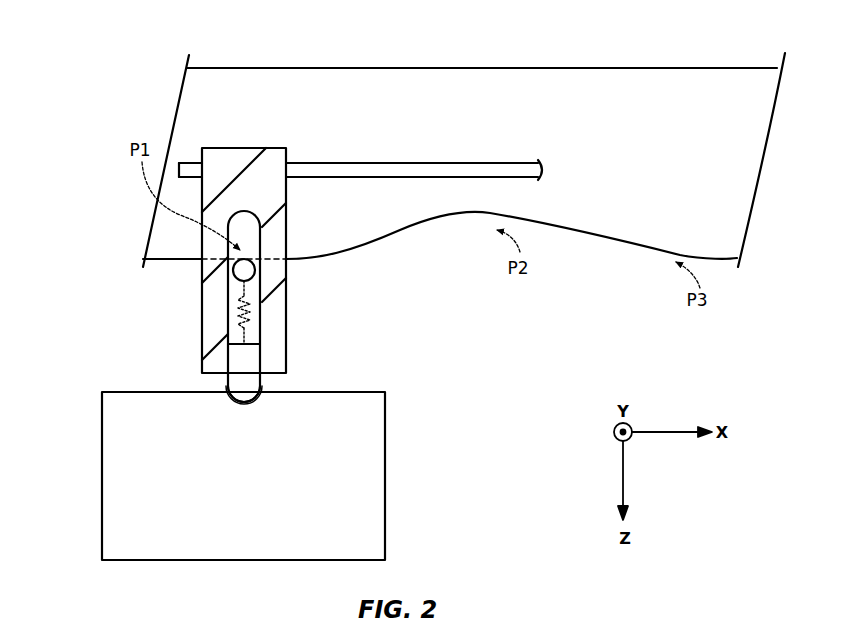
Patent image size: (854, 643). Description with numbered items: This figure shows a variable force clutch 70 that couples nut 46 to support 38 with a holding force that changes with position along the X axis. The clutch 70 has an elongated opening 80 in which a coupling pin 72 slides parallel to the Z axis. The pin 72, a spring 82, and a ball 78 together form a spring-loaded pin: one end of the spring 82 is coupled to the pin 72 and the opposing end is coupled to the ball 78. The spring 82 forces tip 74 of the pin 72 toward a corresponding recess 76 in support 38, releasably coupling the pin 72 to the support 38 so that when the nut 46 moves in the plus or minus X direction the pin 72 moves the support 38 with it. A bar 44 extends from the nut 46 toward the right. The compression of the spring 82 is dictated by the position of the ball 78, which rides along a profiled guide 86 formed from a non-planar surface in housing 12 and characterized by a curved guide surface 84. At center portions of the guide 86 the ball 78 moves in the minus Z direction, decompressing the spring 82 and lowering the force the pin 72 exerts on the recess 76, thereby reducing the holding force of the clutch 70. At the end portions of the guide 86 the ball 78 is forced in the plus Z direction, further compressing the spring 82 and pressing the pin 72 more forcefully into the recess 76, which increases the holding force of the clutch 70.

The housing 12 is at (485, 68).
The support 38 is at (375, 473).
The bar / rod 44 is at (423, 160).
The nut 46 is at (235, 156).
The clutch 70 is at (90, 313).
The coupling pin 72 is at (252, 358).
The tip 74 is at (233, 405).
The recess 76 is at (257, 404).
The ball 78 is at (245, 268).
The opening 80 is at (262, 316).
The spring 82 is at (228, 316).
The guide surface 84 is at (445, 220).
The profiled guide 86 is at (380, 252).